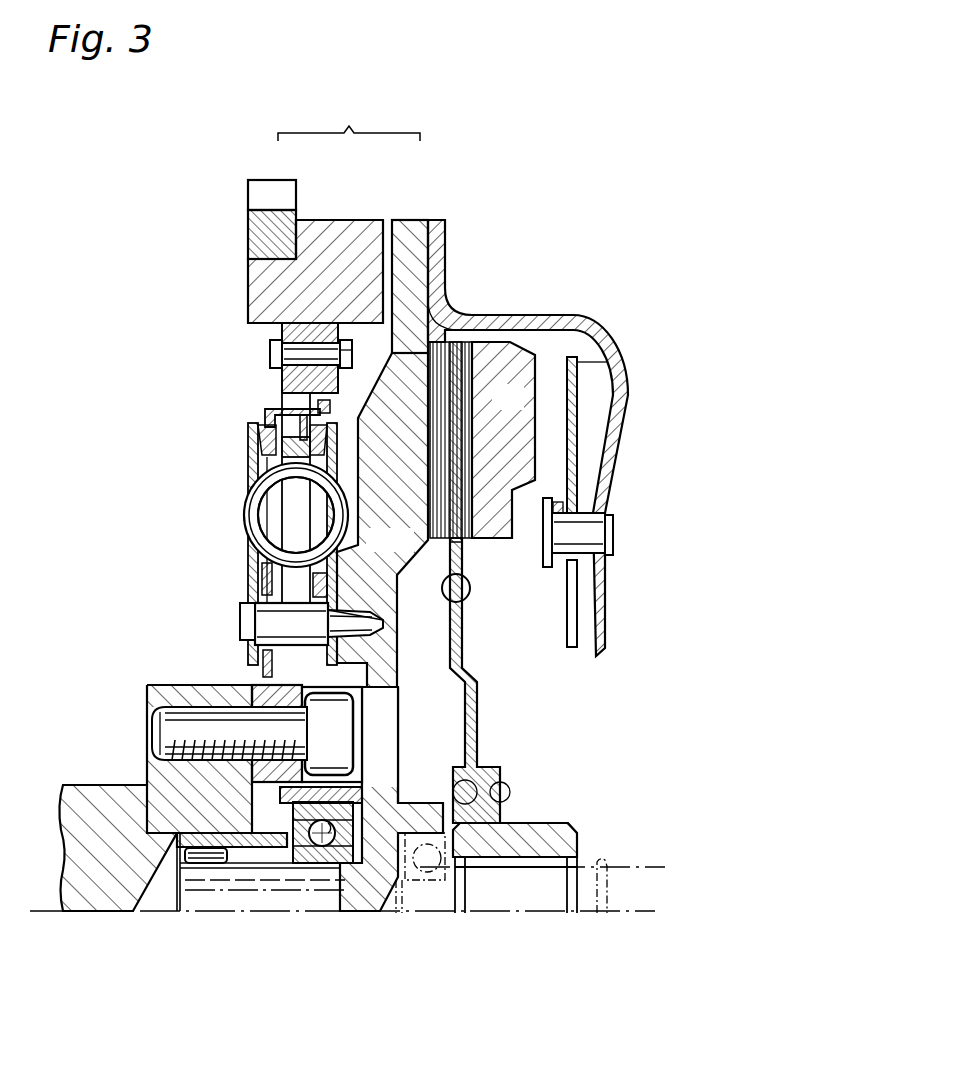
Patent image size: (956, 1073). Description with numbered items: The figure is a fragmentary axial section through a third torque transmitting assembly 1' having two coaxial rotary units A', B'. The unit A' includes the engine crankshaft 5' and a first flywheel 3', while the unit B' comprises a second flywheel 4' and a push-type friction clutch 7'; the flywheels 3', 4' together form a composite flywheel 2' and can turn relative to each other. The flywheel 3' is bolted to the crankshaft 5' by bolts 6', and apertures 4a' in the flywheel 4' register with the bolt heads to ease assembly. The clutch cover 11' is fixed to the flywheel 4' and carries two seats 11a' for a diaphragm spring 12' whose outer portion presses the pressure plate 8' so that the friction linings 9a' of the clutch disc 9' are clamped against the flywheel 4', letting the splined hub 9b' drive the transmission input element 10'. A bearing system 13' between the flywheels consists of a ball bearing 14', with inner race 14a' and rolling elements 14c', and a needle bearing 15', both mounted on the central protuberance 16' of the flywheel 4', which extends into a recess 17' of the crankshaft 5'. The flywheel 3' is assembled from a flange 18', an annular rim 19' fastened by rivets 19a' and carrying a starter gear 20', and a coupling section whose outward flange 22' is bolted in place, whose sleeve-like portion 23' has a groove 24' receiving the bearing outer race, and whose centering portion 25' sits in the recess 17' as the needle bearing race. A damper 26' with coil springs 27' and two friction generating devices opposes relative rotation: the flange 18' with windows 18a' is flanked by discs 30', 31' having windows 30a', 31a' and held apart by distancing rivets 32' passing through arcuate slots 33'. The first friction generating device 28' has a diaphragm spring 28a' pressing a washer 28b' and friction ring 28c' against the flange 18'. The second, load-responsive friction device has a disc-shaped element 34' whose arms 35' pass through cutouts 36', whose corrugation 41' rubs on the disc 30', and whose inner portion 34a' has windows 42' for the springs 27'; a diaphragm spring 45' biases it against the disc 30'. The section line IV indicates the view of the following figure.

The torque transmitting assembly 1' is at (507, 176).
The composite flywheel 2' is at (349, 118).
The first flywheel 3' is at (242, 257).
The second flywheel 4' is at (410, 260).
The apertures 4a' is at (390, 632).
The crankshaft 5' is at (93, 848).
The bolts 6' is at (201, 733).
The push-type friction clutch 7' is at (611, 455).
The pressure plate 8' is at (540, 440).
The clutch disc 9' is at (491, 582).
The friction linings 9a' is at (462, 400).
The internally splined hub 9b' is at (543, 855).
The input element 10' is at (576, 909).
The housing or cover 11' is at (528, 438).
The seats 11a' is at (615, 532).
The diaphragm spring 12' is at (618, 484).
The bearing system 13' is at (265, 920).
The antifriction ball bearing 14' is at (323, 890).
The inner race 14a' is at (393, 897).
The rolling elements 14c' is at (360, 892).
The needle bearing 15' is at (260, 912).
The protuberance 16' is at (265, 925).
The recess 17' is at (131, 897).
The flange 18' is at (307, 733).
The windows 18a' is at (247, 498).
The annular rim 19' is at (315, 245).
The rivets 19a' is at (375, 339).
The starter gear 20' is at (239, 213).
The radially outwardly extending flange 22' is at (307, 734).
The sleeve-like portion 23' is at (361, 766).
The annular groove 24' is at (367, 810).
The sleeve-like centering portion 25' is at (202, 876).
The damper 26' is at (201, 527).
The coil springs 27' is at (264, 515).
The friction generating device 28' is at (230, 581).
The resilient element 28a' is at (427, 594).
The washer 28b' is at (254, 598).
The friction generating ring 28c' is at (392, 626).
The disc 30' is at (227, 655).
The windows 30a' is at (195, 572).
The disc 31' is at (408, 662).
The windows 31a' is at (381, 545).
The distancing elements 32' is at (211, 625).
The arcuate slots 33' is at (311, 624).
The disc-shaped element 34' is at (258, 426).
The radially innermost portion 34a' is at (203, 671).
The arms 35' is at (280, 360).
The openings or cutouts 36' is at (287, 348).
The annular corrugation 41' is at (263, 544).
The windows 42' is at (269, 508).
The diaphragm spring 45' is at (336, 412).
The rotary unit A' is at (128, 565).
The rotary unit B' is at (653, 470).
The section line IV is at (165, 500).